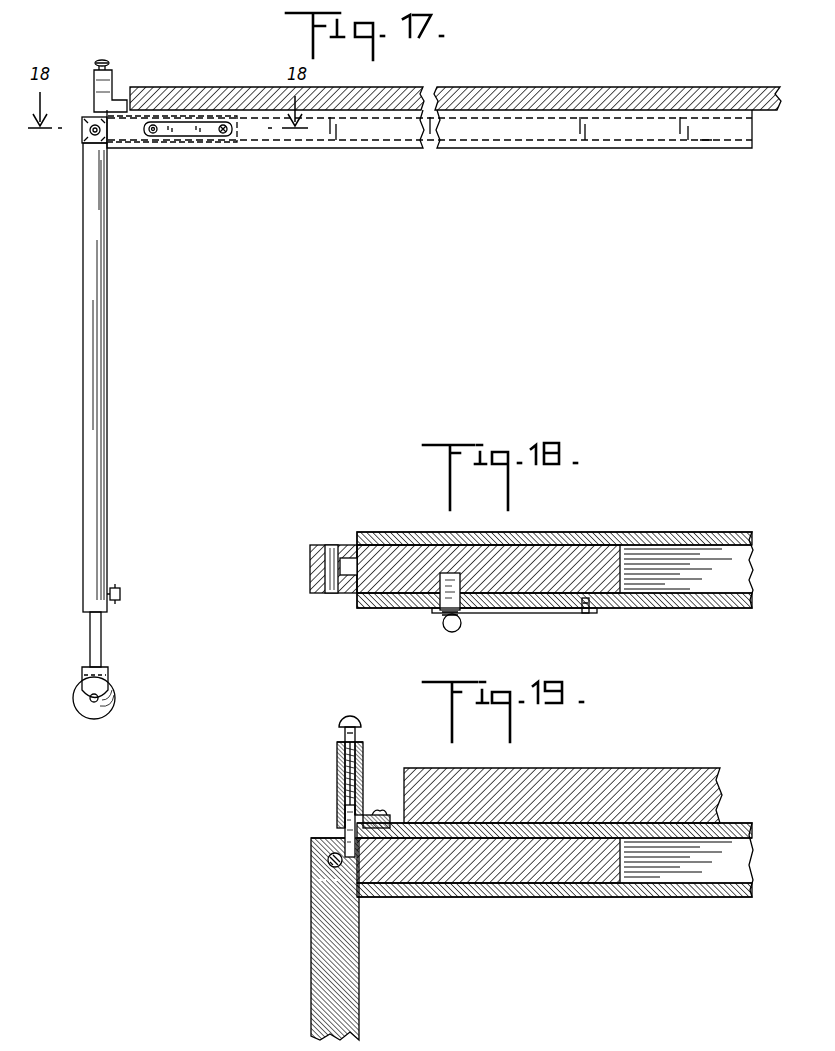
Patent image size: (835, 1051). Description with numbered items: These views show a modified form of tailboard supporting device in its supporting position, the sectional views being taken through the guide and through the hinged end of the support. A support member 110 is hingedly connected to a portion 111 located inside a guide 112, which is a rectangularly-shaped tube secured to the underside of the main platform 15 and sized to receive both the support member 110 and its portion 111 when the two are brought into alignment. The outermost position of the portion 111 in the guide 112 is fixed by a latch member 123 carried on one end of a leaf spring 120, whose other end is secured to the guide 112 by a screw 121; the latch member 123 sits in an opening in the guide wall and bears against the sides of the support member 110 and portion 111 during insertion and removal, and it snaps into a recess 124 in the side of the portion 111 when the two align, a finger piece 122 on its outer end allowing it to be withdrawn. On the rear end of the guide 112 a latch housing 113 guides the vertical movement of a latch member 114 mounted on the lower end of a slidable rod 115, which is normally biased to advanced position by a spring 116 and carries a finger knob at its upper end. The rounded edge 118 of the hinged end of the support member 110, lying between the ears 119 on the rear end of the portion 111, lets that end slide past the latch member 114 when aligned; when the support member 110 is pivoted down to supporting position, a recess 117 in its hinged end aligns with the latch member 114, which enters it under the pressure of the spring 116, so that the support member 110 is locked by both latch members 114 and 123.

In FIG. 17, the main platform 15 is at (448, 88).
In FIG. 19, the main platform 15 is at (635, 775).
In FIG. 17, the support member 110 is at (101, 325).
In FIG. 19, the support member 110 is at (345, 982).
In FIG. 18, the portion of support member 111 is at (583, 548).
In FIG. 19, the portion of support member 111 is at (537, 883).
In FIG. 18, the guide 112 is at (688, 608).
In FIG. 19, the guide 112 is at (697, 897).
In FIG. 17, the latch housing 113 is at (110, 86).
In FIG. 19, the latch housing 113 is at (363, 765).
In FIG. 19, the latch member 114 is at (345, 812).
In FIG. 19, the slidable rod 115 is at (358, 735).
In FIG. 19, the spring 116 is at (345, 752).
In FIG. 19, the recess 117 is at (325, 852).
In FIG. 19, the edge 118 is at (318, 838).
In FIG. 17, the ears 119 is at (82, 142).
In FIG. 17, the leaf spring 120 is at (226, 140).
In FIG. 18, the leaf spring 120 is at (516, 613).
In FIG. 18, the screw 121 is at (586, 614).
In FIG. 18, the finger piece 122 is at (447, 632).
In FIG. 18, the latch member 123 is at (438, 612).
In FIG. 18, the recess 124 is at (440, 578).